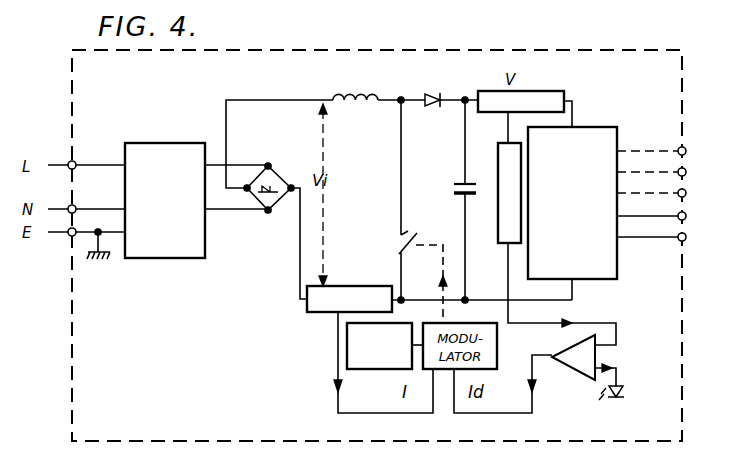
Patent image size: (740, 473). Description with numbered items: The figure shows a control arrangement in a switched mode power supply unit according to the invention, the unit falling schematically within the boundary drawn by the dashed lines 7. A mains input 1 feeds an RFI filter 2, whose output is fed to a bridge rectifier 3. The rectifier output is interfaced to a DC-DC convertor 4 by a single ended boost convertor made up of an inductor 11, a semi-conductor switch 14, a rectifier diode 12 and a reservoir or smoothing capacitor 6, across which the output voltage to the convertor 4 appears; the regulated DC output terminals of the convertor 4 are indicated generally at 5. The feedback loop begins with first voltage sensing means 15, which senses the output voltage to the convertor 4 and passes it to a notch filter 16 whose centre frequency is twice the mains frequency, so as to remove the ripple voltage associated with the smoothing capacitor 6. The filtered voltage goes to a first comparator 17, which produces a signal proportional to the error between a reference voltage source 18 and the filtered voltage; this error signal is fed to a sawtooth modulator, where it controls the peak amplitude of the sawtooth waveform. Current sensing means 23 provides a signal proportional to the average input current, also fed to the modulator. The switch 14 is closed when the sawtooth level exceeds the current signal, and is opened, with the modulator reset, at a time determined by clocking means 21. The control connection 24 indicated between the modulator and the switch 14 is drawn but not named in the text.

The mains input 1 is at (50, 152).
The RFI filter 2 is at (149, 143).
The bridge rectifier 3 is at (262, 176).
The DC-DC convertor 4 is at (585, 130).
The regulated DC output terminals 5 is at (660, 245).
The smoothing capacitor 6 is at (453, 188).
The dashed lines 7 is at (664, 432).
The inductor 11 is at (341, 95).
The rectifier diode 12 is at (433, 94).
The semi-conductor switch 14 is at (405, 246).
The first voltage sensing means 15 is at (494, 88).
The notch filter 16 is at (497, 193).
The first comparator 17 is at (583, 358).
The reference voltage source 18 is at (616, 400).
The clocking means 21 is at (347, 348).
The current sensing means 23 is at (307, 318).
The control connection 24 is at (447, 292).